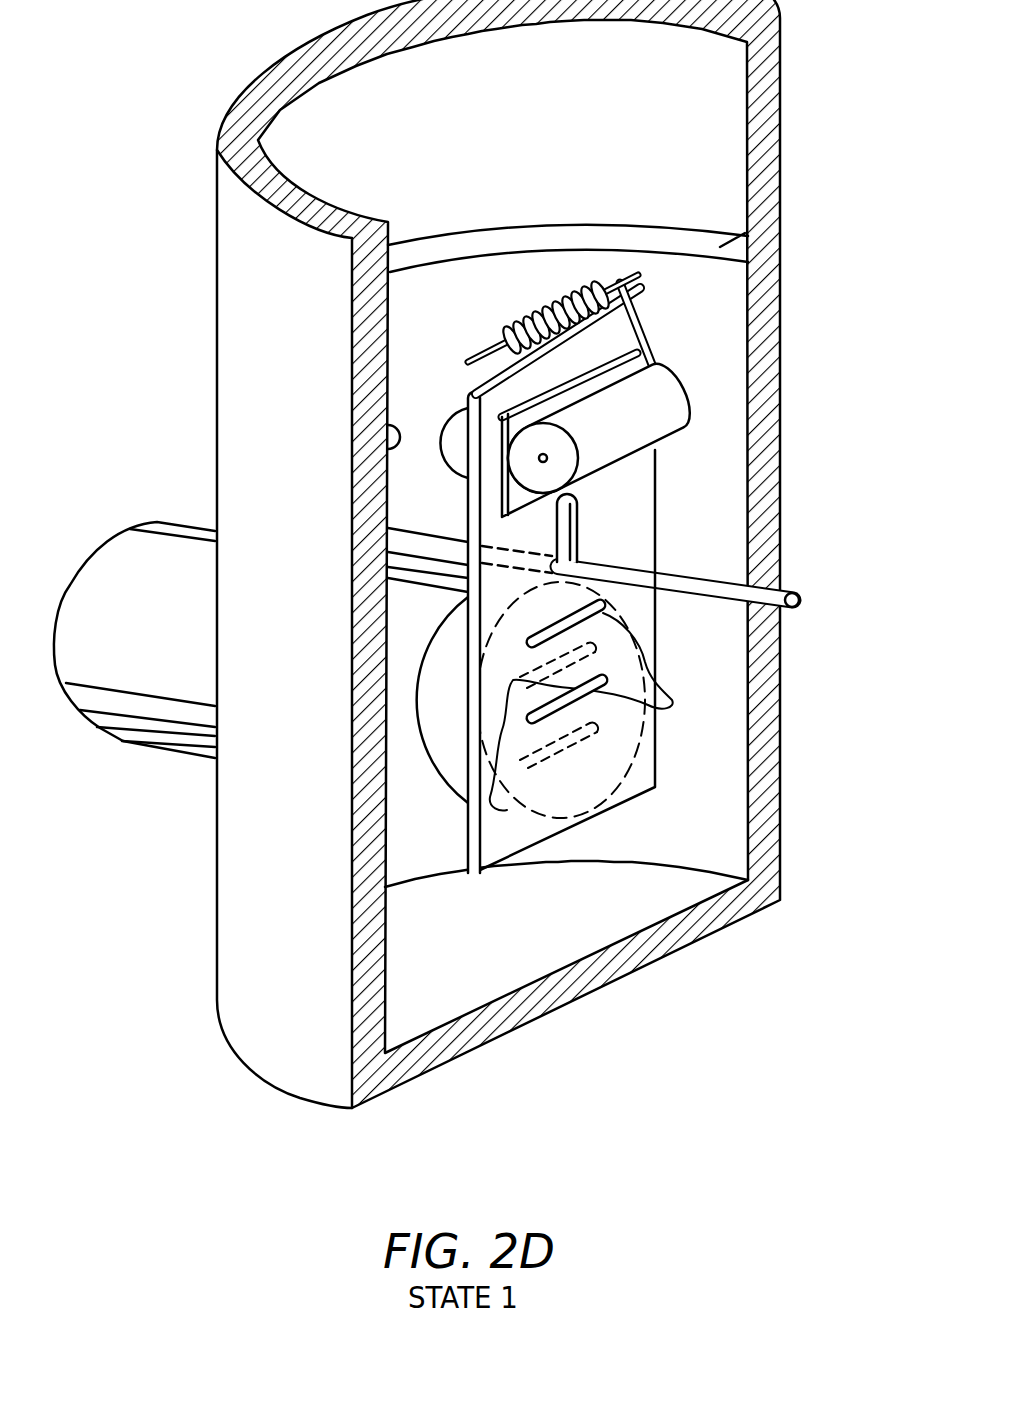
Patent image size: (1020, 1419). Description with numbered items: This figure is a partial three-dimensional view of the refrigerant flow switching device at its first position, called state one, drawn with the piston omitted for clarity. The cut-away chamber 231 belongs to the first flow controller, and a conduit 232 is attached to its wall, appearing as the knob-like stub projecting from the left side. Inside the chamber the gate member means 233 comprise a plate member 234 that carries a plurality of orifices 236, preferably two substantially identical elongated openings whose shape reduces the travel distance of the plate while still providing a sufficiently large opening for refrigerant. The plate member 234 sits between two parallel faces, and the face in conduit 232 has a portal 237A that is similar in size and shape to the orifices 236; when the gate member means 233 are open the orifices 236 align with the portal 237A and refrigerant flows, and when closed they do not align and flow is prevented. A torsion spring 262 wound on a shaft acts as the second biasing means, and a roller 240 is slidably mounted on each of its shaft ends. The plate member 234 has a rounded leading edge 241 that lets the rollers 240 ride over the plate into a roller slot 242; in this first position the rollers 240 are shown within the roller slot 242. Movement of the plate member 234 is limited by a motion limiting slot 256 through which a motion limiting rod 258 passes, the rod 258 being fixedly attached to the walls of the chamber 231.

The chamber 231 is at (781, 212).
The conduit 232 is at (178, 758).
The gate member means 233 is at (680, 538).
The plate member 234 is at (655, 787).
The orifices 236 is at (672, 700).
The portal 237A is at (502, 810).
The roller 240 is at (660, 405).
The leading edge 241 is at (660, 320).
The roller slot 242 is at (470, 504).
The motion limiting slot 256 is at (588, 524).
The motion limiting rod 258 is at (797, 608).
The torsion spring 262 is at (524, 330).